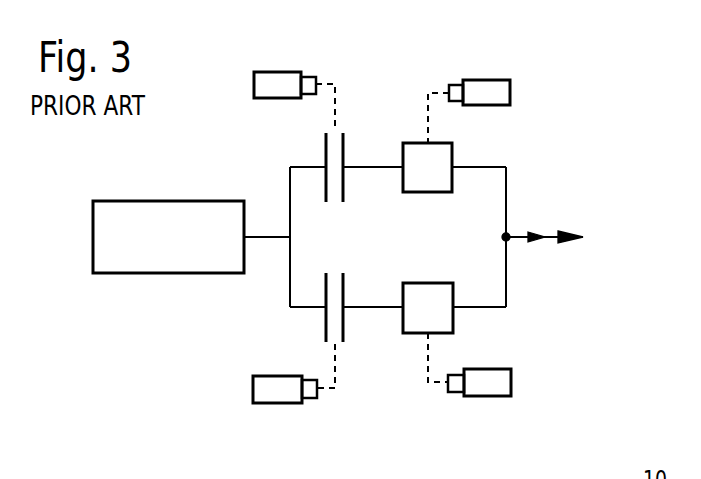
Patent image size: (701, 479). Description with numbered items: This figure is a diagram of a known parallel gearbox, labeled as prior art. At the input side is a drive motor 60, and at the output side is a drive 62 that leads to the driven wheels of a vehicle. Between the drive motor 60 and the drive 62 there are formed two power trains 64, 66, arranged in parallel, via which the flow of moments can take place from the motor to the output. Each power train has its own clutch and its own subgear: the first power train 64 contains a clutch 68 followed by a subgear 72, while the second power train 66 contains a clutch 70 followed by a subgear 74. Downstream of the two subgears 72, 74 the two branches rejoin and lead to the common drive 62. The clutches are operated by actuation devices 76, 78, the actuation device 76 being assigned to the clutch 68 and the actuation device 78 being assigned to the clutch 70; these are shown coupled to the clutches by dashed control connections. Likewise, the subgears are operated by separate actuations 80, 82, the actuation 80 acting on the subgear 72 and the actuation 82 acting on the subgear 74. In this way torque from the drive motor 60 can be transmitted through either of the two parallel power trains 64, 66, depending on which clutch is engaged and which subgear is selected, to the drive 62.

The drive motor 60 is at (127, 258).
The drive 62 is at (554, 235).
The power train 64 is at (258, 170).
The power train 66 is at (258, 306).
The clutch 68 is at (346, 143).
The clutch 70 is at (346, 325).
The subgear 72 is at (447, 150).
The subgear 74 is at (450, 325).
The actuation device 76 is at (280, 80).
The actuation device 78 is at (275, 395).
The actuation 80 is at (487, 85).
The actuation 82 is at (487, 390).